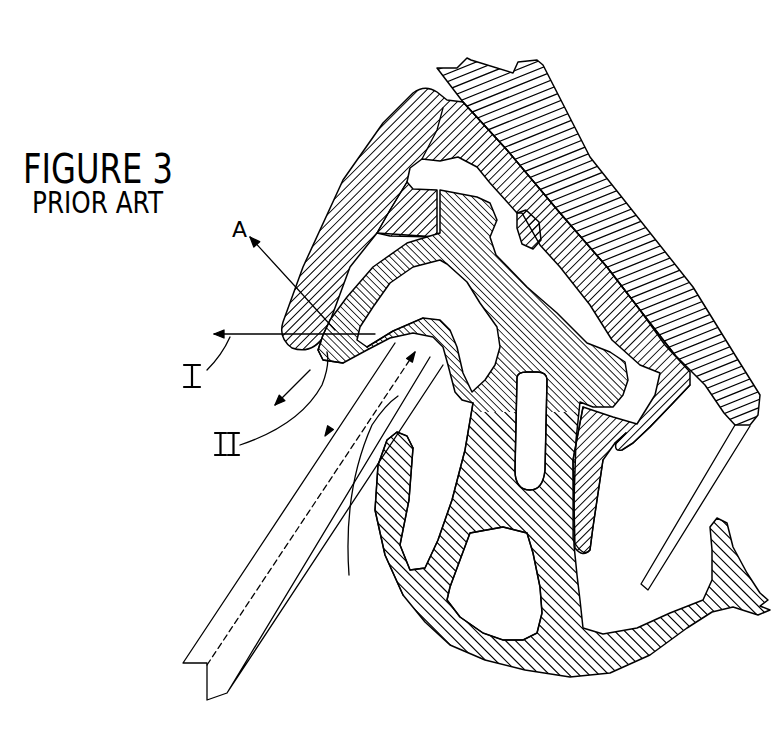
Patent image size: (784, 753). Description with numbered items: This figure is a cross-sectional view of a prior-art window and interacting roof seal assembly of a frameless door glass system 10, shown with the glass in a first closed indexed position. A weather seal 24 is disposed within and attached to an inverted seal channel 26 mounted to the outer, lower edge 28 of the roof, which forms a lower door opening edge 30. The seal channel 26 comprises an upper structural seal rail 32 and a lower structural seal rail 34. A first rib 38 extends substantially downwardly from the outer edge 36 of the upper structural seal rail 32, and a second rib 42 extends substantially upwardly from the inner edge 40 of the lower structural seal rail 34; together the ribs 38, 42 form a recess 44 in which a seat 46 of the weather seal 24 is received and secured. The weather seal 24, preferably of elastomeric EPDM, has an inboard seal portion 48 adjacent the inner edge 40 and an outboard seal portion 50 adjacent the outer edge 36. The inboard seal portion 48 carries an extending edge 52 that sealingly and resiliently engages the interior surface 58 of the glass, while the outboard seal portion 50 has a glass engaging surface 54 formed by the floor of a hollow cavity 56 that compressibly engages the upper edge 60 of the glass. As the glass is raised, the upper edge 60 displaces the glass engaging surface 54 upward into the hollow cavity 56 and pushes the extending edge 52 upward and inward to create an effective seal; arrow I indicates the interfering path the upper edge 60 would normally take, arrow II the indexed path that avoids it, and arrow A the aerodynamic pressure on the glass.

The frameless door glass system 10 is at (313, 67).
The weather seal 24 is at (533, 250).
The inverted seal channel 26 is at (500, 140).
The outer, lower edge of the roof 28 is at (690, 313).
The lower door opening edge 30 is at (300, 347).
The upper structural seal rail 32 is at (348, 207).
The lower structural seal rail 34 is at (593, 520).
The outer edge of the upper structural seal rail 36 is at (303, 300).
The first rib 38 is at (393, 213).
The inner edge of the lower structural seal rail 40 is at (660, 417).
The second rib 42 is at (621, 448).
The recess 44 is at (503, 93).
The seat 46 is at (617, 270).
The inboard seal portion 48 is at (553, 517).
The outboard seal portion 50 is at (297, 377).
The extending edge 52 is at (370, 535).
The glass engaging surface 54 is at (436, 400).
The hollow cavity 56 is at (466, 435).
The interior surface of glass 58 is at (240, 667).
The upper edge of glass 60 is at (366, 499).